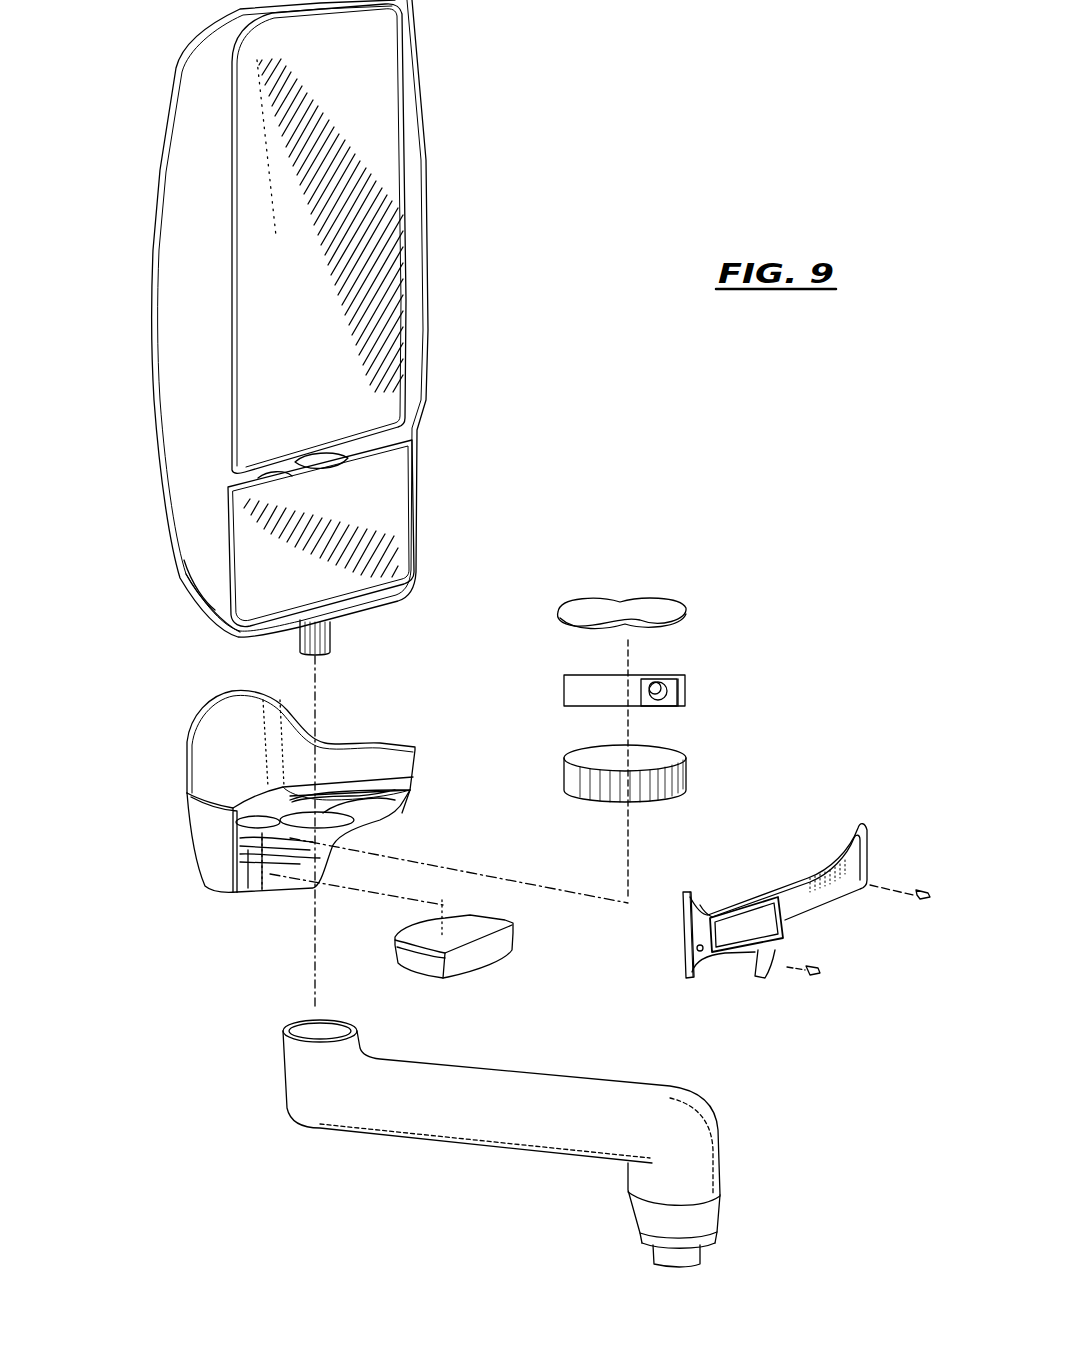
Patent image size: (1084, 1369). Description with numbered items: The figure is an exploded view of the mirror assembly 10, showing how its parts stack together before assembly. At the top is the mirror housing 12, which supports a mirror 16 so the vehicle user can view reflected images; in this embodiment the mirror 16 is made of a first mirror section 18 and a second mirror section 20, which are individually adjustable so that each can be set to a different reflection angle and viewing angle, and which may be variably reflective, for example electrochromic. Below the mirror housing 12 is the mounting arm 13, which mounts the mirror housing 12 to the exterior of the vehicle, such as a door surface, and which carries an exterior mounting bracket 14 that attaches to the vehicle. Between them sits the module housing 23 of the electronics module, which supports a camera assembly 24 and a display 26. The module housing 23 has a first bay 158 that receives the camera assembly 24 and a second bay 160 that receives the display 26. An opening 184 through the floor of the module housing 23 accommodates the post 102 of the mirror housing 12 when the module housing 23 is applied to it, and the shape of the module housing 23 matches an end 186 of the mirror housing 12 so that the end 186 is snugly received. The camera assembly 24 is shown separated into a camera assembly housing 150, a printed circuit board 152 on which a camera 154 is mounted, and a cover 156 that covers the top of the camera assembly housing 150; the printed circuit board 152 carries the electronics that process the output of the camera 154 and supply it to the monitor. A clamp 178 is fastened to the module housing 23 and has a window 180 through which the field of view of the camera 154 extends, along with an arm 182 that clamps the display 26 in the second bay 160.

The mirror assembly 10 is at (520, 100).
The mirror housing 12 is at (420, 150).
The mounting arm 13 is at (447, 1107).
The exterior mounting bracket 14 is at (687, 1176).
The mirror 16 is at (353, 322).
The first mirror section 18 is at (363, 236).
The second mirror section 20 is at (368, 488).
The module housing 23 is at (213, 768).
The camera assembly 24 is at (716, 606).
The display 26 is at (477, 948).
The post 102 is at (331, 642).
The camera assembly housing 150 is at (675, 750).
The printed circuit board 152 is at (575, 692).
The camera 154 is at (658, 700).
The cover 156 is at (610, 605).
The first bay 158 is at (260, 870).
The second bay 160 is at (275, 868).
The clamp 178 is at (808, 878).
The window 180 is at (747, 928).
The arm 182 is at (755, 958).
The opening 184 is at (328, 808).
The end 186 is at (222, 632).